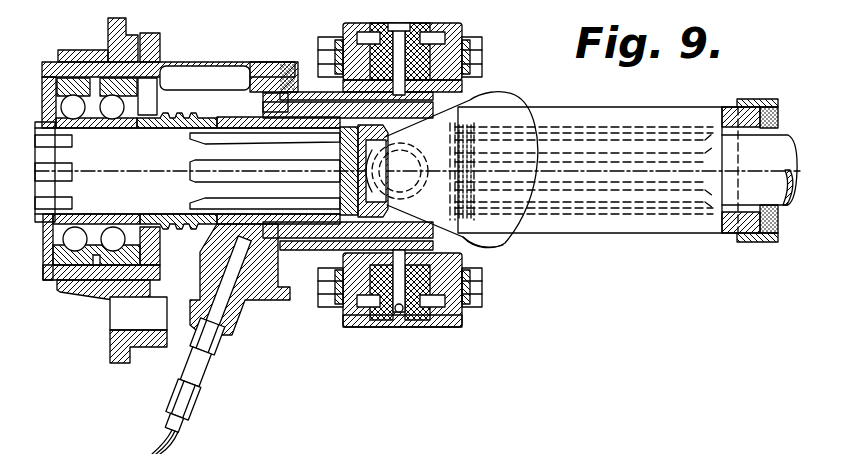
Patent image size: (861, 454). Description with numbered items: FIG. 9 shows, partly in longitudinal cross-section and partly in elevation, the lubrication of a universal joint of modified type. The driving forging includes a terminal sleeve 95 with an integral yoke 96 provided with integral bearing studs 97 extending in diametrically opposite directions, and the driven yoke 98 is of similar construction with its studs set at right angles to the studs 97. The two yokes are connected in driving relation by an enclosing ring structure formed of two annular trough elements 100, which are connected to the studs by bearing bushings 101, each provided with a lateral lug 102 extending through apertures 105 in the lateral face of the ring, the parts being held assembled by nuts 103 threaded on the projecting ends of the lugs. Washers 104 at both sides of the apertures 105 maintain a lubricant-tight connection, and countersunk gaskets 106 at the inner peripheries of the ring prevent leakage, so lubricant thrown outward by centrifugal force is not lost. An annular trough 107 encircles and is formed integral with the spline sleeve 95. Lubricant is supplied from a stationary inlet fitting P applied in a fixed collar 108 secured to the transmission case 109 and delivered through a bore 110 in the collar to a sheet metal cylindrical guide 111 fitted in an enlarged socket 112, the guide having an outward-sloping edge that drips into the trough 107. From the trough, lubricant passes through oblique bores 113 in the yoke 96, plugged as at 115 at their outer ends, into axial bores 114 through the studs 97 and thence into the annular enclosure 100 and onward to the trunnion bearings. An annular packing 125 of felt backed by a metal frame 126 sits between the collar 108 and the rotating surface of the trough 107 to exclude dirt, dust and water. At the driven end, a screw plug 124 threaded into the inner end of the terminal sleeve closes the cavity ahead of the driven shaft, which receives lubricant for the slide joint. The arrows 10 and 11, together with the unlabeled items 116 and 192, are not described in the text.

The section line / direction arrow 10 is at (195, 448).
The section line direction arrows 11 is at (317, 152).
The terminal sleeve 95 is at (253, 280).
The yoke 96 is at (467, 143).
The bearing studs 97 is at (480, 50).
The driven yoke 98 is at (537, 107).
The annular trough elements 100 is at (413, 327).
The bearing bushings 101 is at (467, 33).
The lateral lug 102 is at (475, 63).
The nuts 103 is at (477, 72).
The washers 104 is at (462, 321).
The apertures 105 is at (483, 83).
The countersunk gaskets 106 is at (307, 65).
The annular trough 107 is at (293, 66).
The fixed collar 108 is at (248, 330).
The transmission case 109 is at (73, 292).
The bore 110 is at (228, 286).
The cylindrical guide 111 is at (257, 60).
The enlarged socket 112 is at (220, 242).
The oblique bores 113 is at (368, 115).
The axial bores 114 is at (366, 325).
The plugs 115 is at (540, 130).
The lower clamp block base 116 is at (424, 327).
The screw plug 124 is at (502, 244).
The annular packing 125 is at (299, 290).
The metal frame 126 is at (292, 255).
The drive shaft 192 is at (478, 175).
The inlet fitting P is at (184, 390).